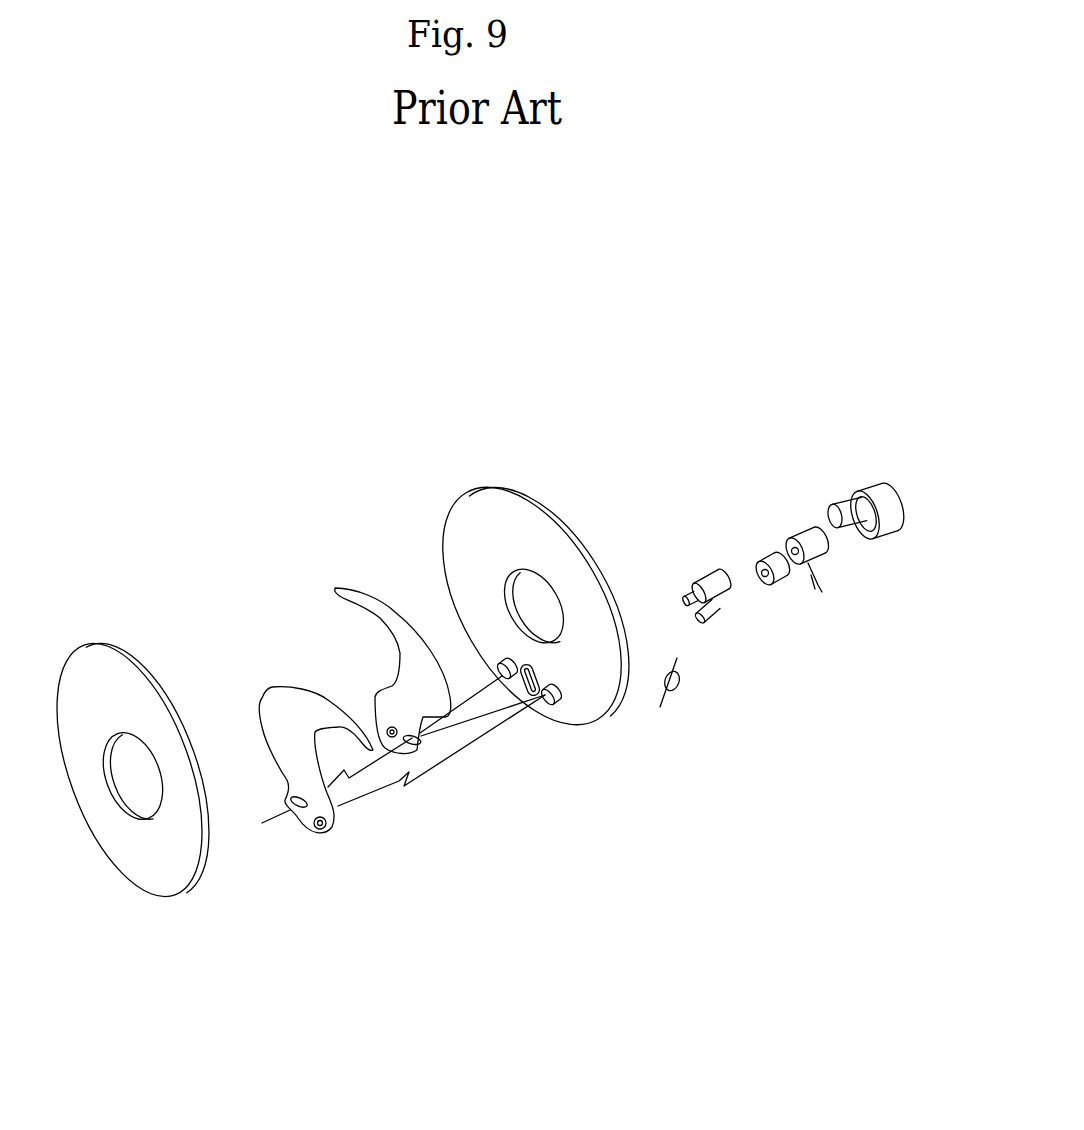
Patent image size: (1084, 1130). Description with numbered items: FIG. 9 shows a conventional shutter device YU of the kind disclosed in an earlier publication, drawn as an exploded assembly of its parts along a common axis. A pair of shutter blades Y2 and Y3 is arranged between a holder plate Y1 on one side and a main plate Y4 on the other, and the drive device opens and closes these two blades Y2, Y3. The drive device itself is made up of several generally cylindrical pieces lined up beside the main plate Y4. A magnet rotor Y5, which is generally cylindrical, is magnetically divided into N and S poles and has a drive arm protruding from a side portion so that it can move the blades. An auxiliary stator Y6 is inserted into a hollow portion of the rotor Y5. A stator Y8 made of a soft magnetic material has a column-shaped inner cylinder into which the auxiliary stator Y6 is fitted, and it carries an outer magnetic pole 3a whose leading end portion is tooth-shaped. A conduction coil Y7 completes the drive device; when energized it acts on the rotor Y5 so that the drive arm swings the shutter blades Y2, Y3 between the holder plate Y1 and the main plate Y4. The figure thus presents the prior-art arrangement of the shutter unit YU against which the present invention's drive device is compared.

The prior art hook unit YU is at (301, 515).
The holder plate Y1 is at (212, 889).
The shutter blade Y2 is at (347, 833).
The shutter blade Y3 is at (455, 749).
The main plate Y4 is at (629, 712).
The magnet rotor Y5 is at (743, 627).
The auxiliary stator Y6 is at (799, 593).
The conduction coil Y7 is at (849, 575).
The stator Y8 is at (904, 536).
The outer magnetic pole 3a is at (895, 507).